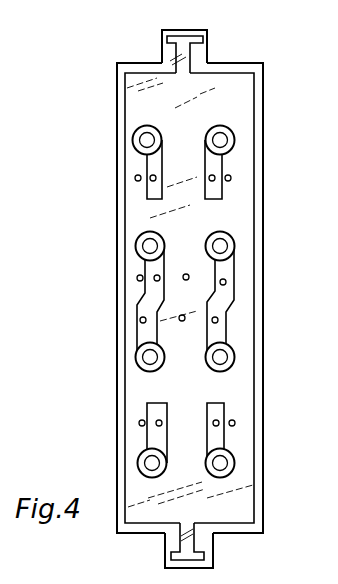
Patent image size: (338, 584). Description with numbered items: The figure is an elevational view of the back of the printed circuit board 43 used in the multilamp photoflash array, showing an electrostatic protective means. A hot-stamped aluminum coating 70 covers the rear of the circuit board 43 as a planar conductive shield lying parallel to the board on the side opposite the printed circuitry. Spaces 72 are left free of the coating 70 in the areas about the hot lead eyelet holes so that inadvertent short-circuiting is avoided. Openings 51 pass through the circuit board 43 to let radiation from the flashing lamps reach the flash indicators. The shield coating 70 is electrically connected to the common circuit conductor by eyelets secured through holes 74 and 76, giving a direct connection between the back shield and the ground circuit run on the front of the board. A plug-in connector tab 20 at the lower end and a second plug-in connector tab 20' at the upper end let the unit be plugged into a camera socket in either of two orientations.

The plug-in connector tab 20 is at (210, 547).
The second plug-in connector tab 20' is at (210, 50).
The circuit board 43 is at (263, 217).
The openings 51 is at (147, 141).
The hot-stamped aluminum coating 70 is at (135, 111).
The spaces 72 is at (148, 191).
The hole 74 is at (186, 274).
The hole 76 is at (182, 321).